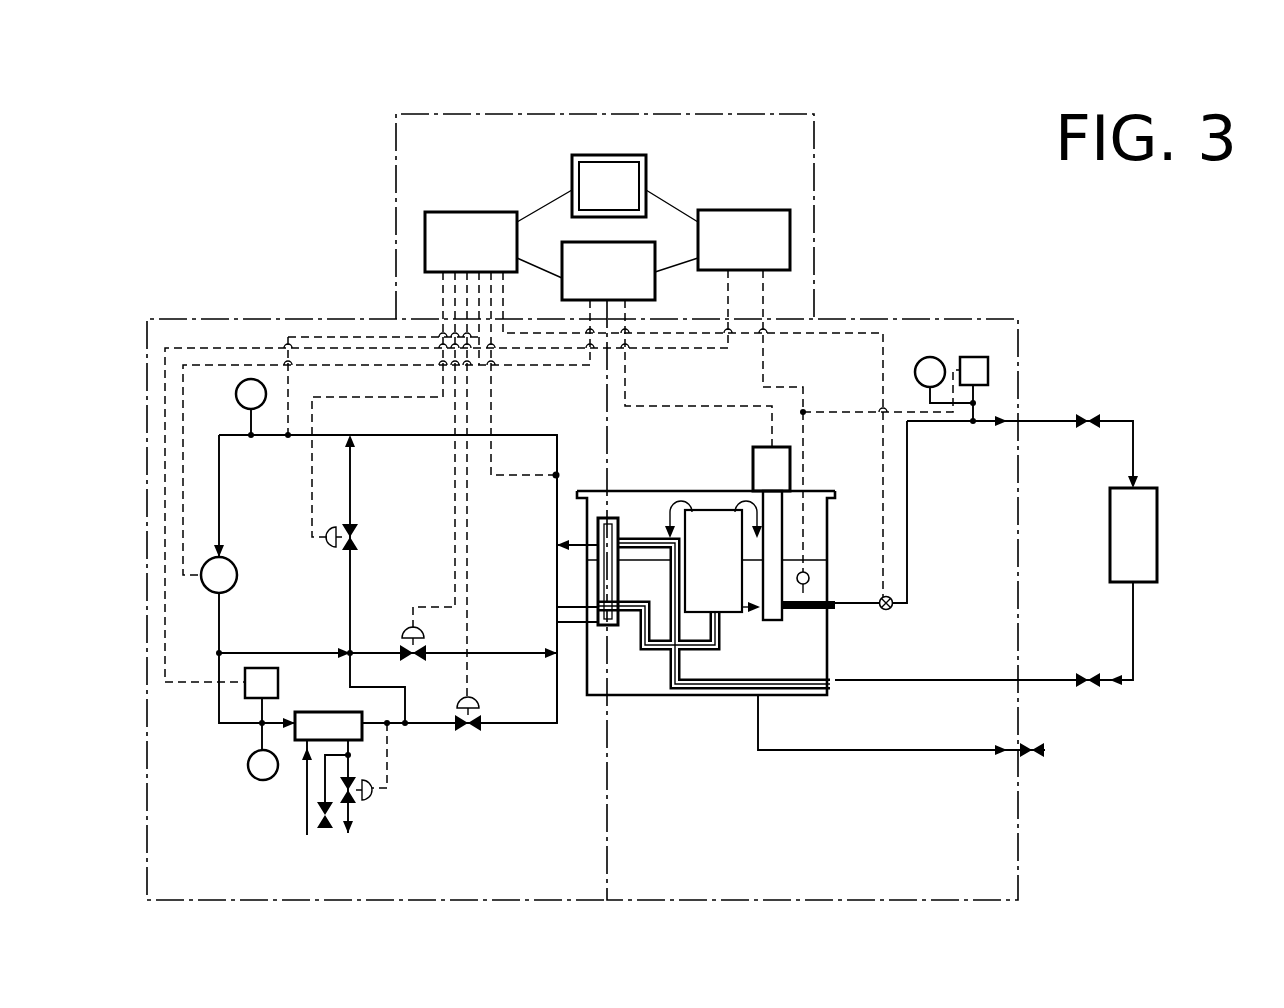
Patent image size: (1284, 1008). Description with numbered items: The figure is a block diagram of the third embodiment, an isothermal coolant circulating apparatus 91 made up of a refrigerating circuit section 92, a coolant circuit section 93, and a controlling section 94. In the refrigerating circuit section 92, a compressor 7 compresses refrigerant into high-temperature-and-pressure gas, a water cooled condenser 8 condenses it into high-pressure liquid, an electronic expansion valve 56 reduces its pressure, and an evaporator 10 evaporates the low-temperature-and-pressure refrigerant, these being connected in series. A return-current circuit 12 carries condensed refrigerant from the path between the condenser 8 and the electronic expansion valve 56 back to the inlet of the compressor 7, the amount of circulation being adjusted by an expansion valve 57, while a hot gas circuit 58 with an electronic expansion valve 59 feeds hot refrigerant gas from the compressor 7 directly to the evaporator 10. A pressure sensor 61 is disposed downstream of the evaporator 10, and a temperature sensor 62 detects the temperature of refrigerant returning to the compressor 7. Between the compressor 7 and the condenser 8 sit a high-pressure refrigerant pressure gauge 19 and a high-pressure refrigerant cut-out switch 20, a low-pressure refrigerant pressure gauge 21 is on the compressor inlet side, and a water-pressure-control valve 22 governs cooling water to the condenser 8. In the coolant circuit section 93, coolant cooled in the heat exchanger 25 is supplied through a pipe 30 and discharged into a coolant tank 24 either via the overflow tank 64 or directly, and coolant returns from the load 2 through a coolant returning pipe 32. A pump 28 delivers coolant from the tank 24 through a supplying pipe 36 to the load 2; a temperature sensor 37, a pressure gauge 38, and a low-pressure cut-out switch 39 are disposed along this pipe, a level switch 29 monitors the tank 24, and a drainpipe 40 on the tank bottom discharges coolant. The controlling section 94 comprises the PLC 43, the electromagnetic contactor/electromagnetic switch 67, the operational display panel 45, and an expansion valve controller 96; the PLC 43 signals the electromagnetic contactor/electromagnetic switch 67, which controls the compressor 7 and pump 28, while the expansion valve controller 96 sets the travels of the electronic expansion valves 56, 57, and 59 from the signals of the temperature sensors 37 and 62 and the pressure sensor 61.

The load 2 is at (1122, 553).
The compressor 7 is at (212, 584).
The condenser 8 is at (327, 712).
The evaporator 10 is at (566, 623).
The return-current circuit 12 is at (352, 584).
The high-pressure refrigerant pressure gauge 19 is at (248, 768).
The high-pressure refrigerant cut-out switch 20 is at (250, 686).
The low-pressure refrigerant pressure gauge 21 is at (249, 379).
The water-pressure-control valve 22 is at (372, 801).
The coolant tank 24 is at (828, 648).
The heat exchanger 25 is at (617, 628).
The pump 28 is at (761, 456).
The level switch 29 is at (811, 576).
The pipe 30 is at (660, 652).
The coolant returning pipe 32 is at (930, 683).
The supplying pipe 36 is at (909, 538).
The temperature sensor 37 is at (893, 609).
The pressure gauge 38 is at (930, 357).
The low-pressure cut-out switch 39 is at (975, 357).
The drainpipe 40 is at (922, 752).
The PLC 43 is at (728, 257).
The operational display panel 45 is at (593, 204).
The electronic expansion valve 56 is at (468, 734).
The expansion valve 57 is at (331, 541).
The hot gas circuit 58 is at (273, 652).
The electronic expansion valve 59 is at (413, 662).
The pressure sensor 61 is at (557, 474).
The temperature sensor 62 is at (288, 438).
The overflow tank 64 is at (688, 550).
The electromagnetic contactor/electromagnetic switch 67 is at (592, 289).
The isothermal coolant circulating apparatus 91 is at (1014, 119).
The refrigerating circuit section 92 is at (168, 306).
The coolant circuit section 93 is at (1032, 349).
The controlling section 94 is at (820, 208).
The expansion valve controller 96 is at (455, 259).